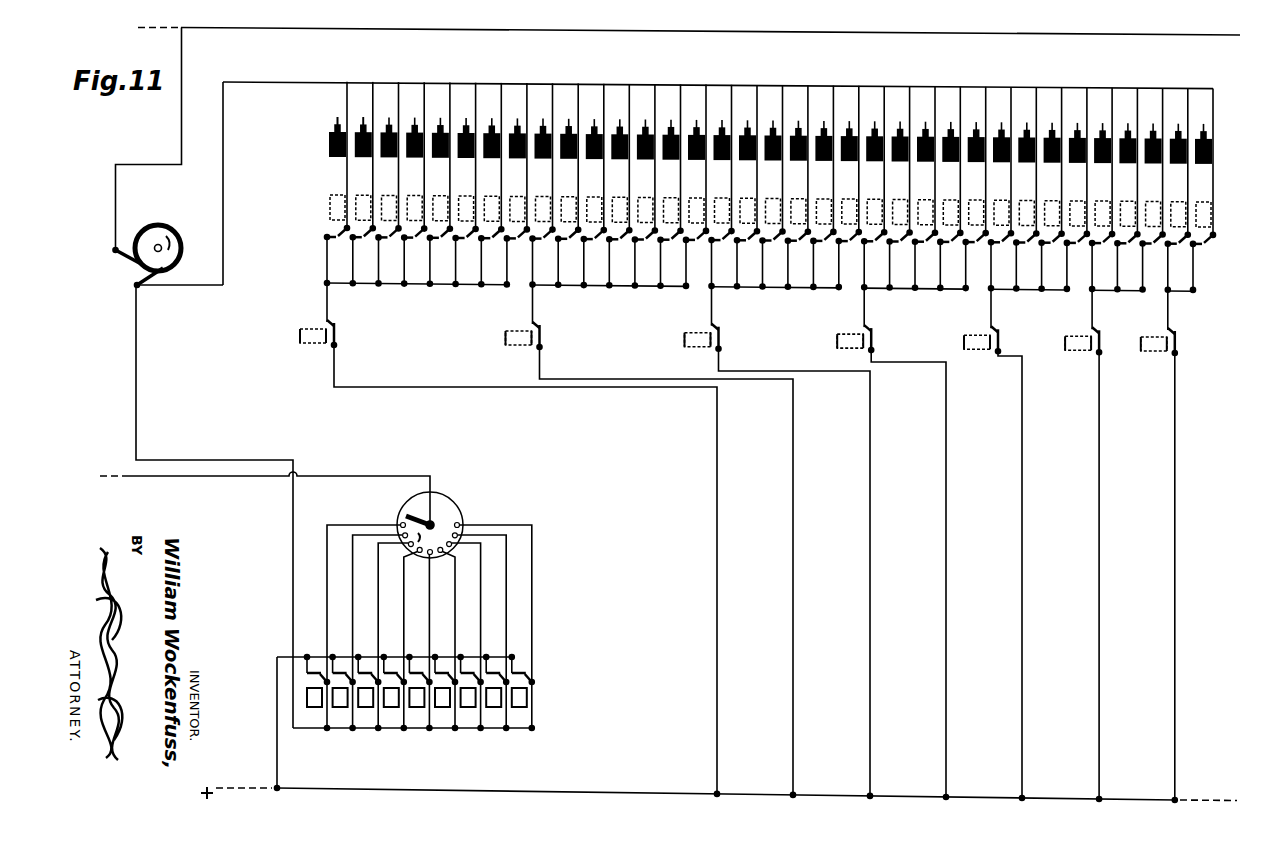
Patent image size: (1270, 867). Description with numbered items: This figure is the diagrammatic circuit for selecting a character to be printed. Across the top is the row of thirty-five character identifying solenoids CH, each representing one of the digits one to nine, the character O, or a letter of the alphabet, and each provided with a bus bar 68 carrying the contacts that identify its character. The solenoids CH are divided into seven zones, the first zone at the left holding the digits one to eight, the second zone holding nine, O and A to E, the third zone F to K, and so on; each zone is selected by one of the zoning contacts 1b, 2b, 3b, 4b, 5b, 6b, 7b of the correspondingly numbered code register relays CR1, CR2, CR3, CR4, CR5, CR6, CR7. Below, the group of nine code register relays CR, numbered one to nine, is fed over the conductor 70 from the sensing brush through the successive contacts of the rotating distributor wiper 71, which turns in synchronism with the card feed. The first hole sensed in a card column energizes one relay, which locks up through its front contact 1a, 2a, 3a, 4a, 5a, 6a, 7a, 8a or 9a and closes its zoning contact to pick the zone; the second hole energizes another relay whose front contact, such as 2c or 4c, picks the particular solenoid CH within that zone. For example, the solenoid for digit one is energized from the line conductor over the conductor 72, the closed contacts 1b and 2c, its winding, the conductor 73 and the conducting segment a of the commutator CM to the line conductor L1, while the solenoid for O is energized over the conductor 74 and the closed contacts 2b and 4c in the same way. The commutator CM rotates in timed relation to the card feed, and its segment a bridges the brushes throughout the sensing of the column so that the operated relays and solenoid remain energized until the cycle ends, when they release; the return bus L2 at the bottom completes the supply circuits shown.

The line conductor L1 is at (236, 30).
The supply line L2 is at (638, 775).
The conducting segment of the commutator a is at (163, 225).
The commutator CM is at (176, 270).
The conductor 73 is at (224, 170).
The character identifying solenoids CH is at (754, 187).
The bus bars 68 is at (362, 118).
The front contact of relay CR2 2c is at (333, 232).
The front contact of relay CR4 4c is at (572, 286).
The zoning contact of relay CR1 1b is at (334, 323).
The zoning contact of relay CR2 2b is at (540, 325).
The zoning contact of relay CR3 3b is at (718, 327).
The zoning contact of relay CR4 4b is at (871, 328).
The zoning contact of relay CR5 5b is at (998, 329).
The zoning contact of relay CR6 6b is at (1099, 330).
The zoning contact of relay CR7 7b is at (1175, 331).
The code register relay CR1 is at (306, 347).
The code register relay CR2 is at (512, 349).
The code register relay CR3 is at (691, 351).
The code register relay CR4 is at (844, 352).
The code register relay CR5 is at (971, 353).
The code register relay CR6 is at (1072, 354).
The code register relay CR7 is at (1147, 355).
The conductor 72 is at (716, 493).
The conductor 74 is at (792, 496).
The conductor 70 is at (213, 483).
The rotating distributor wiper 71 is at (410, 515).
The front contact of relay CR1 1a is at (317, 672).
The front contact of relay CR2 2a is at (343, 672).
The front contact of relay CR3 3a is at (368, 672).
The front contact of relay CR4 4a is at (394, 672).
The front contact of relay CR5 5a is at (419, 672).
The front contact of relay CR6 6a is at (445, 672).
The front contact of relay CR7 7a is at (470, 672).
The front contact of relay CR8 8a is at (496, 672).
The front contact of relay CR9 9a is at (521, 672).
The code register relays CR is at (436, 699).